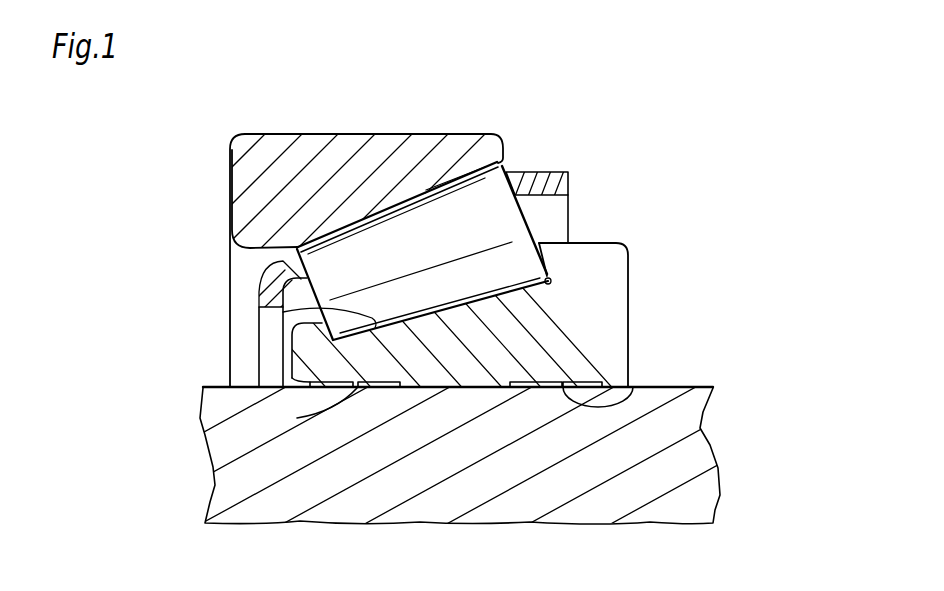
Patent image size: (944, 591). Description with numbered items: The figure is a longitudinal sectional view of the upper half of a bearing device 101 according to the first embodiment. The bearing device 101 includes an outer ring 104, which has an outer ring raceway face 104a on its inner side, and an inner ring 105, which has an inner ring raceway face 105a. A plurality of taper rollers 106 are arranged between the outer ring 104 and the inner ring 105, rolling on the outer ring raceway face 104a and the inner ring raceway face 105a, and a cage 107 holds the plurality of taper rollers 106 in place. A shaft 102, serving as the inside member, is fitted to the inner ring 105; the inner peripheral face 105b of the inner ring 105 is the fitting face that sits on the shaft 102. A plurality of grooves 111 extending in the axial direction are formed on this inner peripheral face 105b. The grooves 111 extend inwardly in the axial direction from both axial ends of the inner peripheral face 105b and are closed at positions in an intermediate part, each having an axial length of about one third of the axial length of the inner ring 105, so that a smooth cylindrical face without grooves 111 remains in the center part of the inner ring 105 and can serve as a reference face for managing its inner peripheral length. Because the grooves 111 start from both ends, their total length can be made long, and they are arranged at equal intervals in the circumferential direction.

The bearing device 101 is at (663, 213).
The shaft 102 is at (683, 459).
The outer ring 104 is at (388, 142).
The outer ring raceway face 104a is at (336, 238).
The inner ring 105 is at (612, 312).
The inner ring raceway face 105a is at (320, 310).
The inner peripheral face 105b is at (473, 388).
The taper rollers 106 is at (484, 197).
The cage 107 is at (553, 182).
The grooves 111 is at (297, 418).